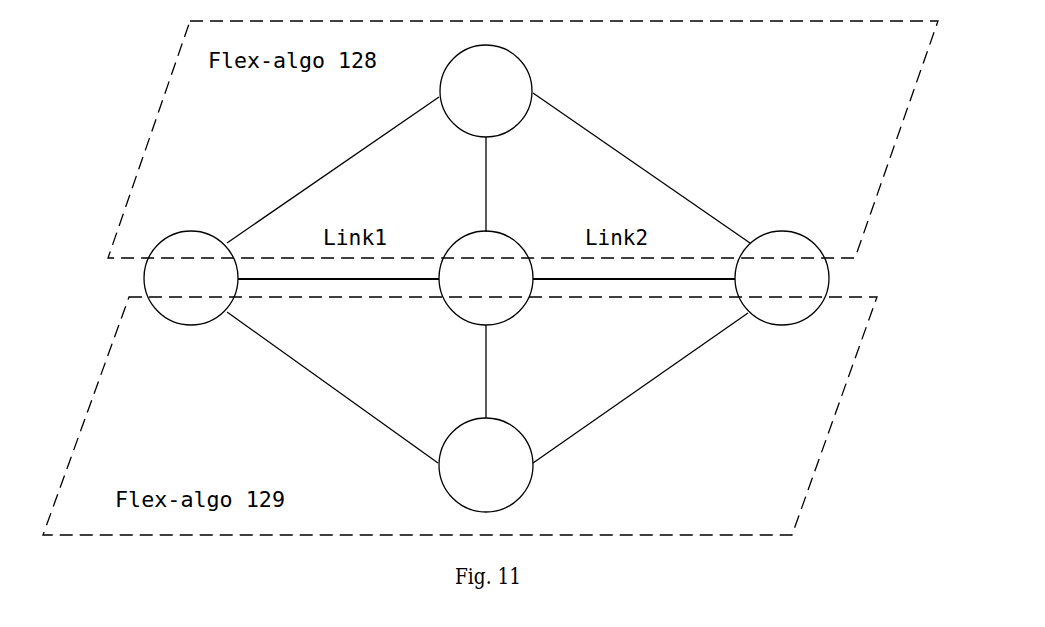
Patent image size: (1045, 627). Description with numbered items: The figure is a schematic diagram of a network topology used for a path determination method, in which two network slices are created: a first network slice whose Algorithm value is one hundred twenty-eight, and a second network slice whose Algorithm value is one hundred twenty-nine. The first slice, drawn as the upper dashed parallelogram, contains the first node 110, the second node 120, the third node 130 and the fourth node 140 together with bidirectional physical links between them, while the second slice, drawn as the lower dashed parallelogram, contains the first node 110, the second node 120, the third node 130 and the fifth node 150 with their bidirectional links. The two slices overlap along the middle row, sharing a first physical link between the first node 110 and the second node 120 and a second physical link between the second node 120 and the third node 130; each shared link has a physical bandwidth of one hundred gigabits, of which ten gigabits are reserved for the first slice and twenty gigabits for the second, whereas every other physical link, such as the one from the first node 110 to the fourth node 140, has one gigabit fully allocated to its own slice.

The first node 110 is at (145, 278).
The second node 120 is at (520, 313).
The third node 130 is at (828, 272).
The fourth node 140 is at (533, 80).
The fifth node 150 is at (527, 492).